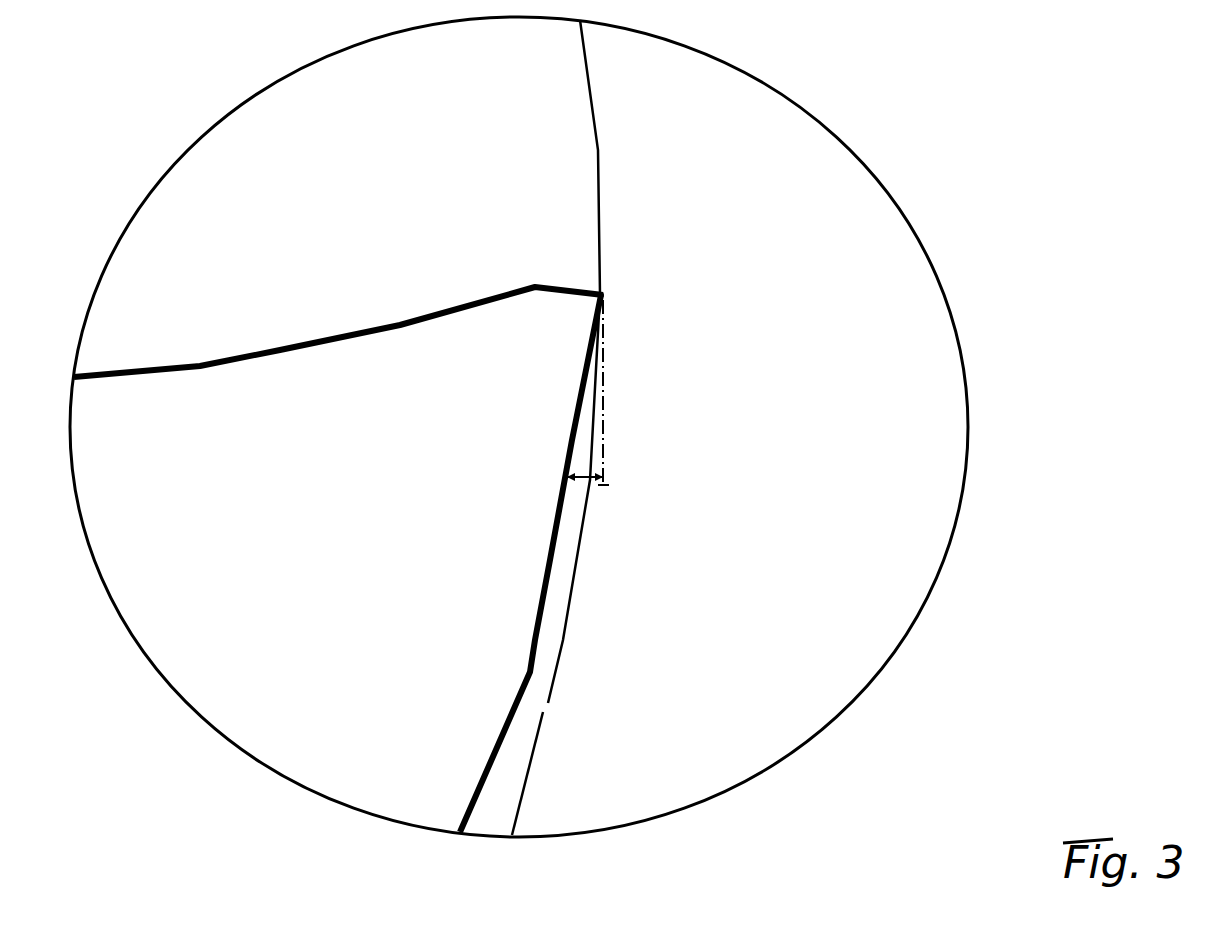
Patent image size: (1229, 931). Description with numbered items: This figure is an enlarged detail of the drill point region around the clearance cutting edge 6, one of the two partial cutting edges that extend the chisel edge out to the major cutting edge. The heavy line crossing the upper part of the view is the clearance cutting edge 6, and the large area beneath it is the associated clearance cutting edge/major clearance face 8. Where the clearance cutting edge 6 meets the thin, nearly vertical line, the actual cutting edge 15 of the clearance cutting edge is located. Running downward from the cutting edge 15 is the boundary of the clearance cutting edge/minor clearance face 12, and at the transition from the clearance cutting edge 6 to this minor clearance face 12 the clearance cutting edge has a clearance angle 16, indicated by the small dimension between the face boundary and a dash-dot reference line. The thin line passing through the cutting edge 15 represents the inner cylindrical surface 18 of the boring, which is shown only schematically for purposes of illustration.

The clearance cutting edge 6 is at (323, 344).
The clearance cutting edge/major clearance face 8 is at (374, 526).
The clearance cutting edge/minor clearance face 12 is at (553, 560).
The cutting edge 15 is at (603, 292).
The clearance angle 16 is at (583, 498).
The inner cylindrical surface 18 is at (600, 172).